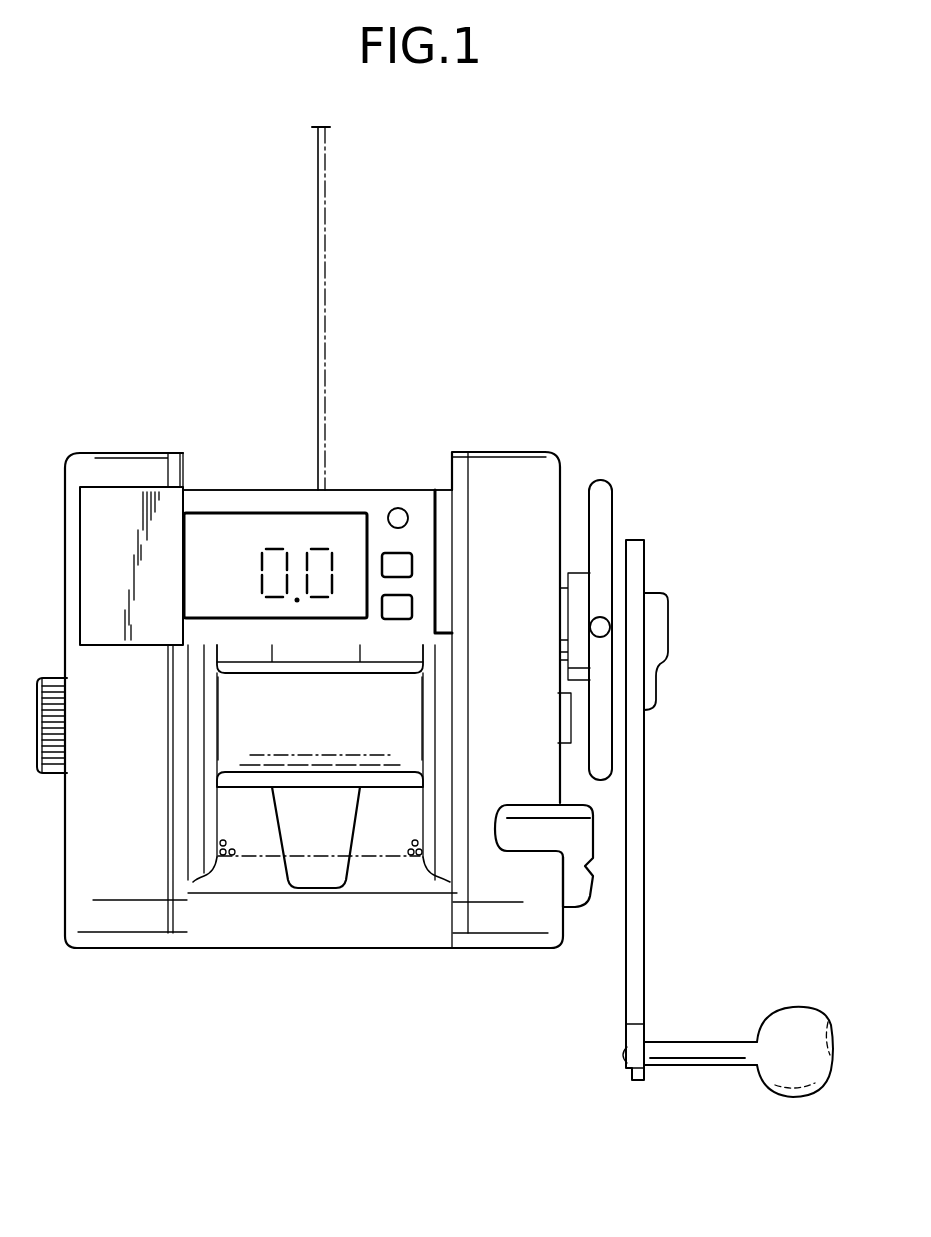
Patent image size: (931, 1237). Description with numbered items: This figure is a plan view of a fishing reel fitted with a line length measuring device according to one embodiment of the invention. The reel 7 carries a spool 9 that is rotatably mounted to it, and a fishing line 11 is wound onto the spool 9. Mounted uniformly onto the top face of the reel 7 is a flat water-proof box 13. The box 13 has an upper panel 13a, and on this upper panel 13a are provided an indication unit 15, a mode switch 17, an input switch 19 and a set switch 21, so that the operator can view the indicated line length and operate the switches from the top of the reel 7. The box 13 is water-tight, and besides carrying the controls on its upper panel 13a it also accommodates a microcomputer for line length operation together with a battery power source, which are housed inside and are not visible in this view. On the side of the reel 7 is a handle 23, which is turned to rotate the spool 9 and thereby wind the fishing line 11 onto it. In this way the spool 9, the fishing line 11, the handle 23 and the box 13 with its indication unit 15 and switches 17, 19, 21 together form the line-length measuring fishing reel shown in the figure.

The reel 7 is at (130, 482).
The spool 9 is at (268, 742).
The fishing line 11 is at (325, 283).
The flat water-proof box 13 is at (90, 497).
The upper panel 13a is at (262, 497).
The indication unit 15 is at (343, 524).
The mode switch 17 is at (408, 512).
The input switch 19 is at (412, 563).
The set switch 21 is at (412, 601).
The handle 23 is at (637, 907).